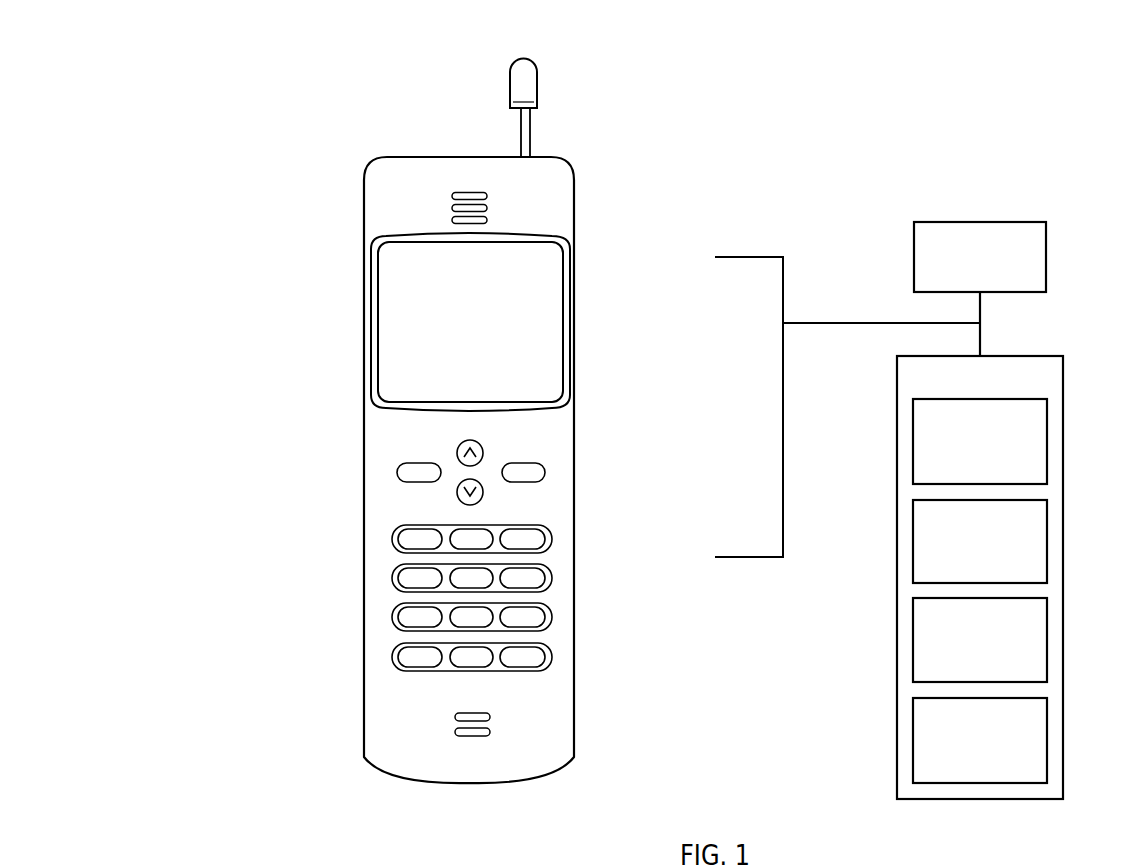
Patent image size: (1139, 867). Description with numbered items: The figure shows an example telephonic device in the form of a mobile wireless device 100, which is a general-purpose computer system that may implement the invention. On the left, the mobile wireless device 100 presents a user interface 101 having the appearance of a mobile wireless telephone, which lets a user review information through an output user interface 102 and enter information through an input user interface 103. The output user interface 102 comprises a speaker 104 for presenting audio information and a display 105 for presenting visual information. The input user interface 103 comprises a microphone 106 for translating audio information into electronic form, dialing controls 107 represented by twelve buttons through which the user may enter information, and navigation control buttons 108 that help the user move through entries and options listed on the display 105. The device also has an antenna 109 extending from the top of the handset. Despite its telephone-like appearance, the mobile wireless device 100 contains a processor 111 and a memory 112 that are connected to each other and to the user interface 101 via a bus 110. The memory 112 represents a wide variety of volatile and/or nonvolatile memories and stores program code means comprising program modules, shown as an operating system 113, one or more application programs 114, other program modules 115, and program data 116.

The mobile wireless device 100 is at (815, 135).
The user interface 101 is at (580, 787).
The output user interface 102 is at (587, 398).
The input user interface 103 is at (587, 745).
The speaker 104 is at (357, 203).
The display 105 is at (357, 320).
The microphone 106 is at (357, 723).
The dialing controls 107 is at (358, 672).
The navigation control buttons 108 is at (357, 466).
The antenna 109 is at (558, 120).
The bus 110 is at (815, 322).
The processor 111 is at (966, 281).
The memory 112 is at (999, 389).
The operating system 113 is at (966, 474).
The application programs 114 is at (966, 575).
The program modules 115 is at (966, 675).
The program data 116 is at (966, 775).